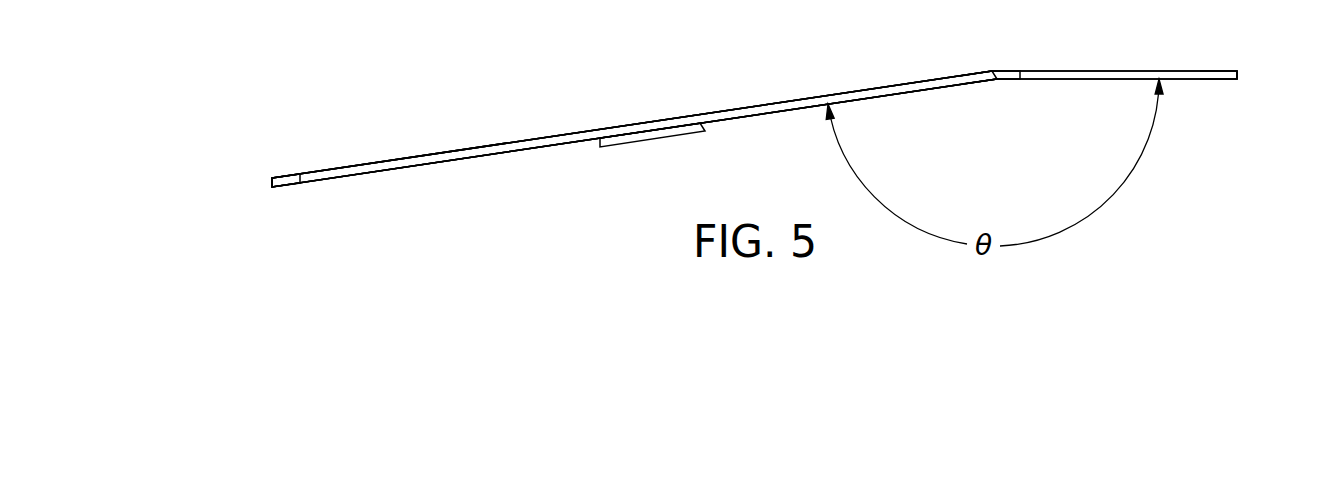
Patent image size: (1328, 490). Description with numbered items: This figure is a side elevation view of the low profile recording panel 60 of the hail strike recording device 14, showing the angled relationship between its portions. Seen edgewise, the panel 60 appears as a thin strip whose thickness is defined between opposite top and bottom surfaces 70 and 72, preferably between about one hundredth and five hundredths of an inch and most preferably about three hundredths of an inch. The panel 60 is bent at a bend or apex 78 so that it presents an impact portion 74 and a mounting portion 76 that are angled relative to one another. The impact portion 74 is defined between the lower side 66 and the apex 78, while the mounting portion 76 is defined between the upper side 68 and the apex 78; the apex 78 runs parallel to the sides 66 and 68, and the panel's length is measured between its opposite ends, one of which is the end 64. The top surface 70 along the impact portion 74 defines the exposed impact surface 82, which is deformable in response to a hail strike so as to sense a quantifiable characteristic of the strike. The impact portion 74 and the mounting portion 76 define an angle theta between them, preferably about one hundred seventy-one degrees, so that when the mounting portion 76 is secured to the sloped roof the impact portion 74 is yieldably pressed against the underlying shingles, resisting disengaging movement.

The hail strike recording device 14 is at (296, 75).
The low profile recording panel 60 is at (754, 129).
The opposite end 64 is at (657, 129).
The lower side 66 is at (286, 180).
The upper side 68 is at (1238, 74).
The top surface 70 is at (730, 109).
The bottom surface 72 is at (482, 156).
The impact portion 74 is at (271, 182).
The mounting portion 76 is at (1218, 75).
The bend or apex 78 is at (991, 71).
The exposed impact surface 82 is at (530, 139).